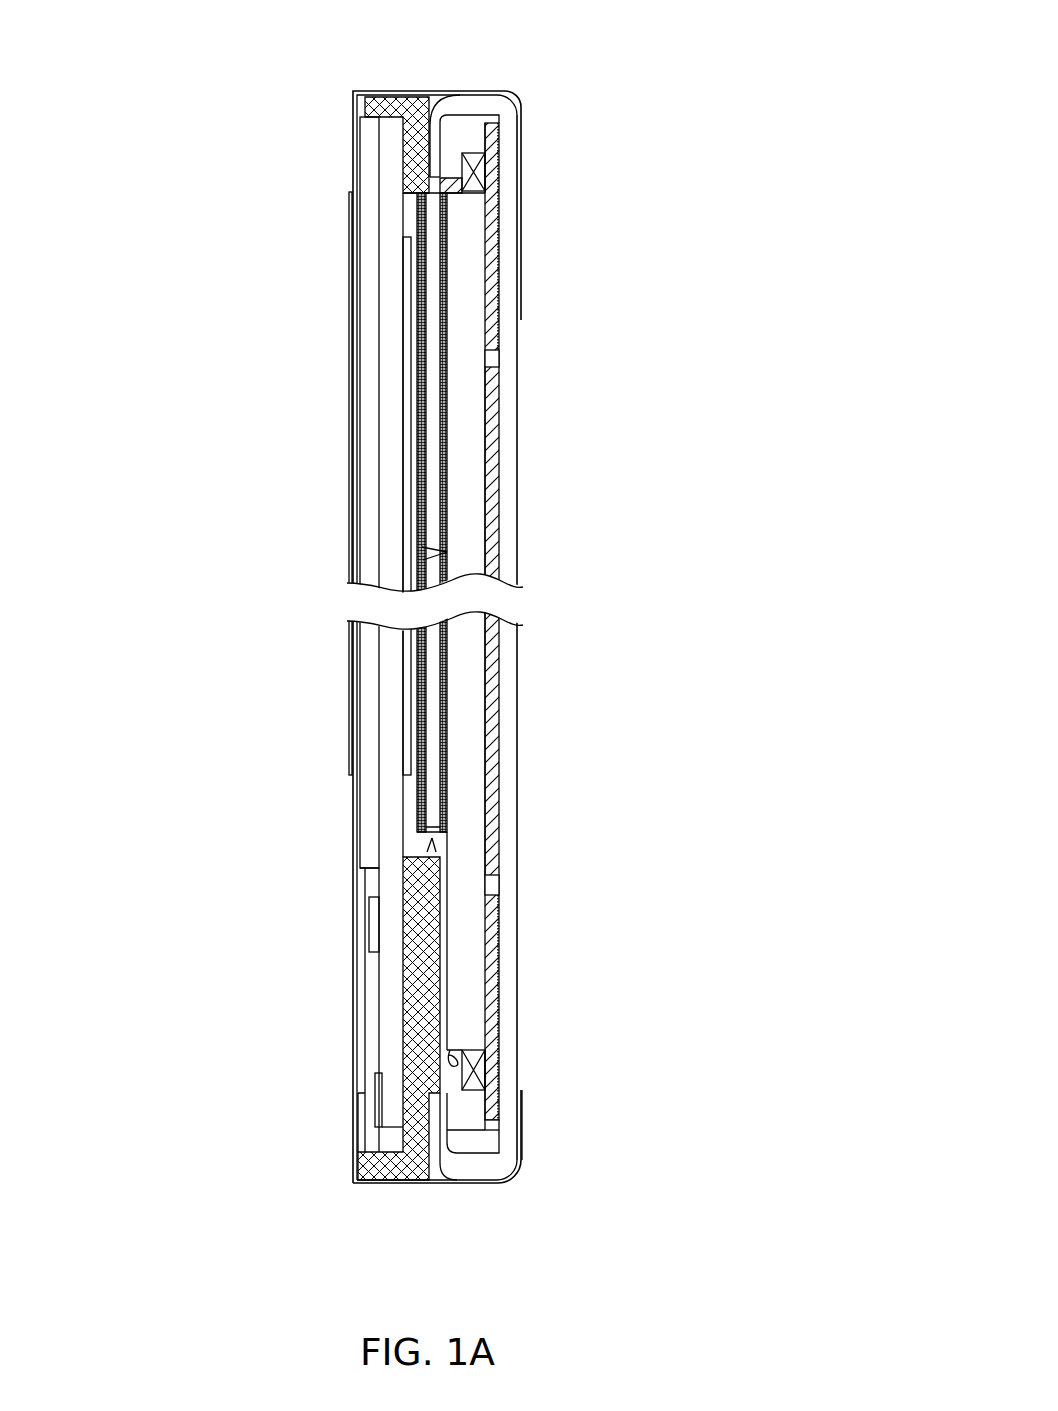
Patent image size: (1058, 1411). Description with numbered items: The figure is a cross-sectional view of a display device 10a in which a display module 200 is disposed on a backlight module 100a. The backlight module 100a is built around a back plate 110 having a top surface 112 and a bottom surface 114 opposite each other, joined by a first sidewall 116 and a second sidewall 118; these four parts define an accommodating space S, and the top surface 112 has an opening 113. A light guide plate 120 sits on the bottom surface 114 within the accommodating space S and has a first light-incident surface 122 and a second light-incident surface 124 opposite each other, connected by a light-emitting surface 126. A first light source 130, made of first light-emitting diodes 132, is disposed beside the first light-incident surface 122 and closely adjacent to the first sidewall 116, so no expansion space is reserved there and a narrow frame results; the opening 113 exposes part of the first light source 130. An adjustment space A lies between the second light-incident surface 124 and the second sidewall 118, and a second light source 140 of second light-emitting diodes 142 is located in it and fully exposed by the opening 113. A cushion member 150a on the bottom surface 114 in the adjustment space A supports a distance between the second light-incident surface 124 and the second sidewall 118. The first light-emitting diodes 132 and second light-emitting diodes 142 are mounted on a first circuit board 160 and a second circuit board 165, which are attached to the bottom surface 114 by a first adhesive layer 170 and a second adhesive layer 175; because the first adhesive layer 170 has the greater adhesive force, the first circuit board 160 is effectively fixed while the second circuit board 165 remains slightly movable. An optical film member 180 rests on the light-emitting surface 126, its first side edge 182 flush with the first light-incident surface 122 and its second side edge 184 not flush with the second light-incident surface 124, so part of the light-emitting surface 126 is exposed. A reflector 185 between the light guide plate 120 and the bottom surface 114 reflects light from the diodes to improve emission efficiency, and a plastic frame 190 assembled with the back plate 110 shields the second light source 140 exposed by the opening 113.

The backlight module 100a is at (512, 78).
The display device 10a is at (700, 1300).
The back plate 110 is at (500, 627).
The top surface 112 is at (412, 103).
The opening 113 is at (432, 193).
The bottom surface 114 is at (510, 410).
The first sidewall 116 is at (490, 100).
The second sidewall 118 is at (472, 1172).
The light guide plate 120 is at (555, 626).
The first light-incident surface 122 is at (490, 178).
The second light-incident surface 124 is at (478, 1055).
The light-emitting surface 126 is at (447, 552).
The first light source 130 is at (576, 160).
The first light-emitting diodes 132 is at (478, 165).
The second light source 140 is at (572, 1073).
The second light-emitting diodes 142 is at (483, 1070).
The cushion member 150a is at (473, 1143).
The first circuit board 160 is at (508, 284).
The second circuit board 165 is at (500, 1005).
The first adhesive layer 170 is at (500, 240).
The second adhesive layer 175 is at (500, 935).
The optical film member 180 is at (425, 428).
The first side edge 182 is at (447, 186).
The second side edge 184 is at (432, 840).
The reflector 185 is at (500, 515).
The plastic frame 190 is at (376, 100).
The display module 200 is at (370, 330).
The accommodating space S is at (470, 125).
The adjustment space A is at (468, 1107).